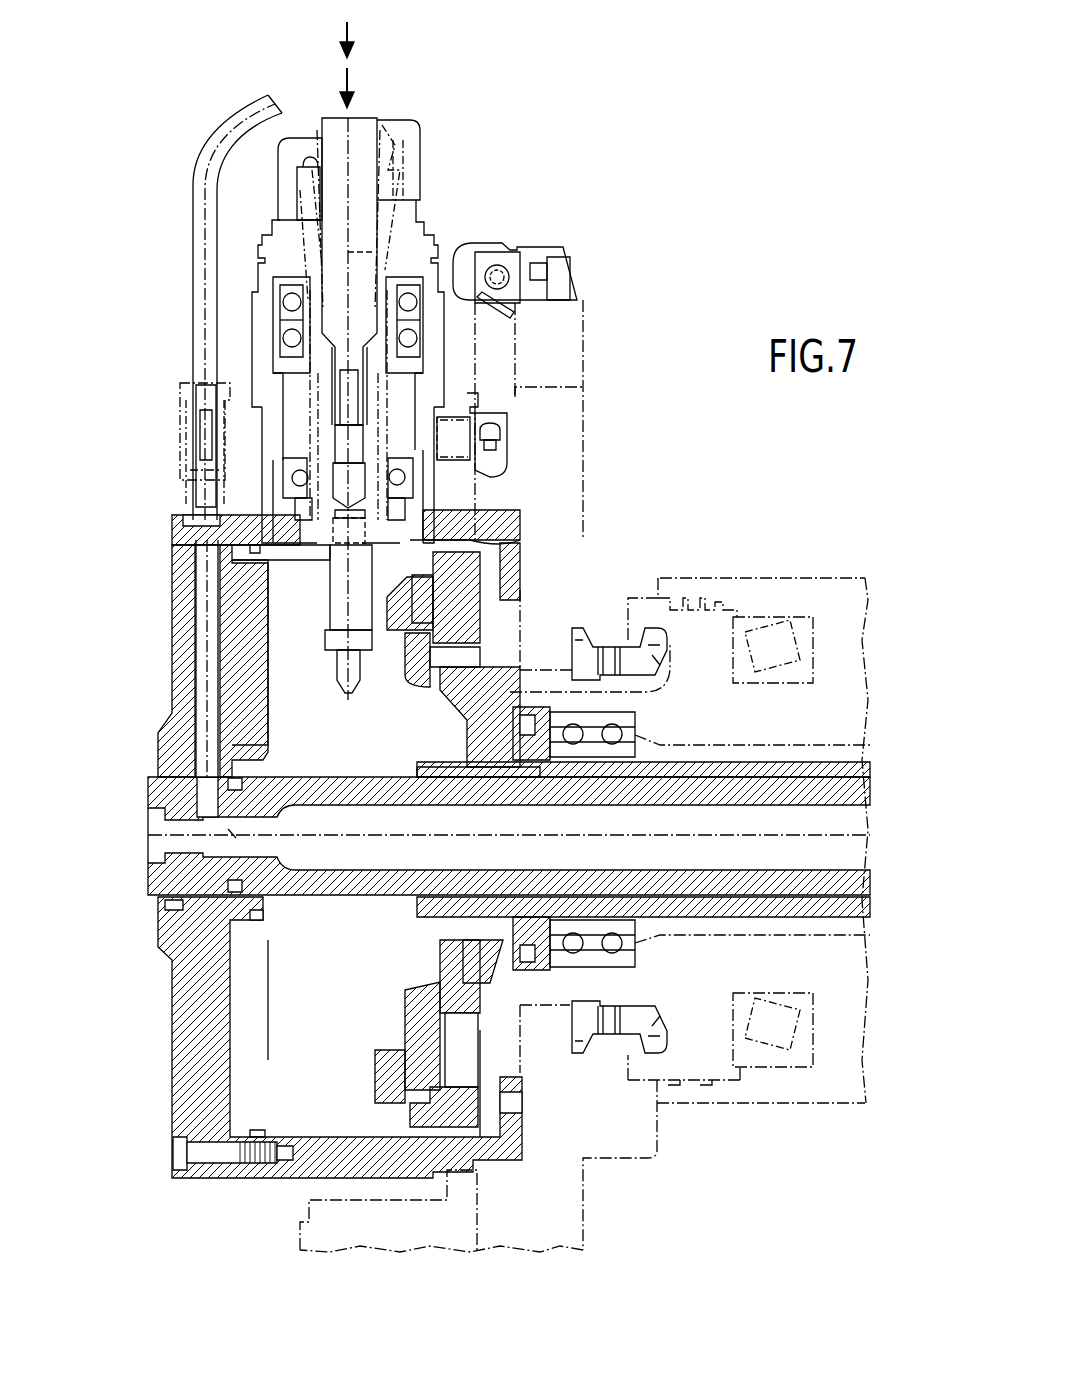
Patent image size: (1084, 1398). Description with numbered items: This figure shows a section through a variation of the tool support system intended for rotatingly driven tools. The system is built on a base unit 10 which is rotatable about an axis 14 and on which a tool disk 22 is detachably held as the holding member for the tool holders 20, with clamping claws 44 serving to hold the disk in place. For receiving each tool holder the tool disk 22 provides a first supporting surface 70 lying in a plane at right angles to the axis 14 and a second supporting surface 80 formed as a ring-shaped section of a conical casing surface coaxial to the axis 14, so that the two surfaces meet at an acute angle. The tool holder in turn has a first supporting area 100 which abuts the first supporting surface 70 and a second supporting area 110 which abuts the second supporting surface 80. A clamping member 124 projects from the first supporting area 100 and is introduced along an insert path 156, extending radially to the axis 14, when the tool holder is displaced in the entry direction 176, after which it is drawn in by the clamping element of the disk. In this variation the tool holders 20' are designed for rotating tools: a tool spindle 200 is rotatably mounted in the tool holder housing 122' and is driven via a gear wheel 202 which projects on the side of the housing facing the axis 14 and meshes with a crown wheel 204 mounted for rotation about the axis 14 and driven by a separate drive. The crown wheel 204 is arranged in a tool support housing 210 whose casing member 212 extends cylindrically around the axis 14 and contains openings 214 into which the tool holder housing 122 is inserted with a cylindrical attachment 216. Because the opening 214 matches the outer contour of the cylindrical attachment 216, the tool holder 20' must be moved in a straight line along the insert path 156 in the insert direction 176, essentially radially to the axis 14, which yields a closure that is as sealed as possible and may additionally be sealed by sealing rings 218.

The entry direction 176 is at (352, 32).
The insert path 156 is at (352, 72).
The tool holder 20' is at (398, 398).
The tool holder 20 is at (398, 398).
The second supporting area 110 is at (470, 298).
The second supporting surface 80 is at (540, 258).
The first supporting area 100 is at (478, 348).
The tool holder housing 122' is at (566, 421).
The tool holder housing 122 is at (566, 421).
The tool disk 22 is at (550, 372).
The first supporting surface 70 is at (470, 403).
The clamping member 124 is at (505, 453).
The openings 214 is at (420, 507).
The sealing rings 218 is at (412, 540).
The clamping claws 44 is at (647, 657).
The base unit 10 is at (840, 731).
The axis 14 is at (333, 840).
The crown wheel 204 is at (400, 640).
The gear wheel 202 is at (310, 605).
The cylindrical attachment 216 is at (280, 540).
The tool support housing 210 is at (180, 612).
The tool spindle 200 is at (330, 352).
The casing member 212 is at (300, 1180).